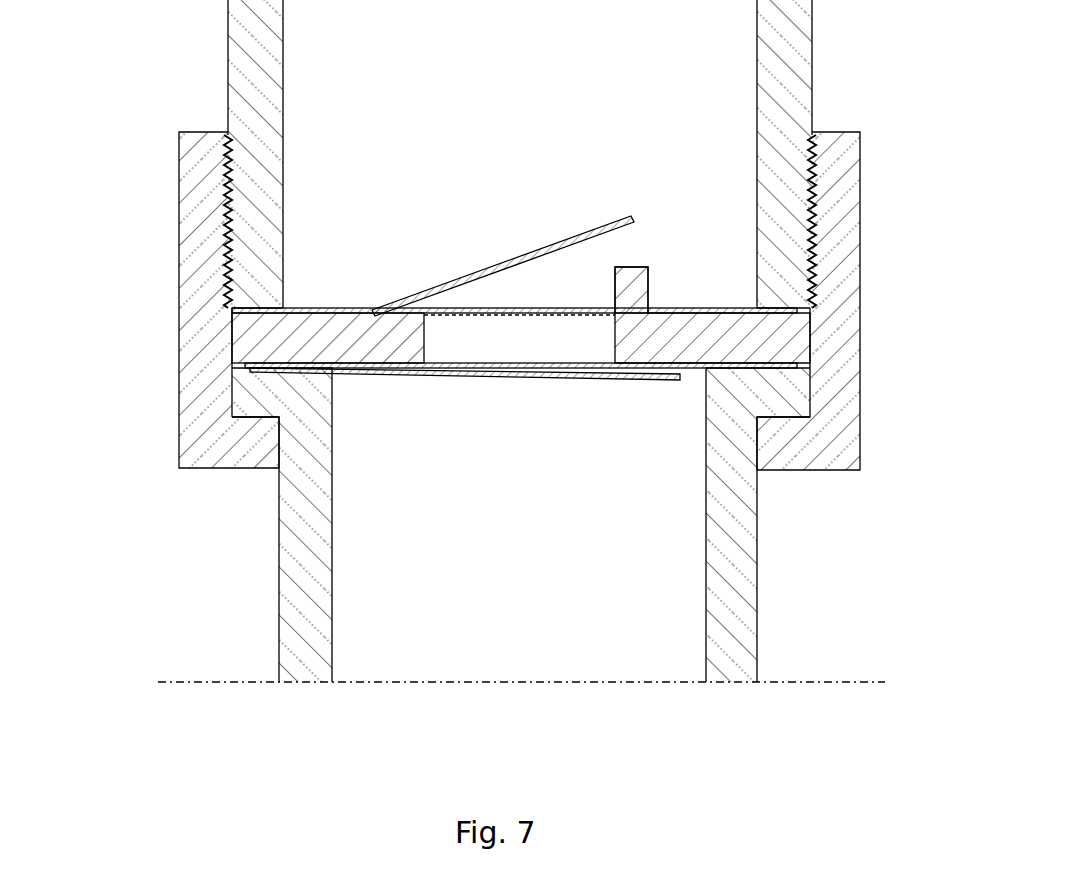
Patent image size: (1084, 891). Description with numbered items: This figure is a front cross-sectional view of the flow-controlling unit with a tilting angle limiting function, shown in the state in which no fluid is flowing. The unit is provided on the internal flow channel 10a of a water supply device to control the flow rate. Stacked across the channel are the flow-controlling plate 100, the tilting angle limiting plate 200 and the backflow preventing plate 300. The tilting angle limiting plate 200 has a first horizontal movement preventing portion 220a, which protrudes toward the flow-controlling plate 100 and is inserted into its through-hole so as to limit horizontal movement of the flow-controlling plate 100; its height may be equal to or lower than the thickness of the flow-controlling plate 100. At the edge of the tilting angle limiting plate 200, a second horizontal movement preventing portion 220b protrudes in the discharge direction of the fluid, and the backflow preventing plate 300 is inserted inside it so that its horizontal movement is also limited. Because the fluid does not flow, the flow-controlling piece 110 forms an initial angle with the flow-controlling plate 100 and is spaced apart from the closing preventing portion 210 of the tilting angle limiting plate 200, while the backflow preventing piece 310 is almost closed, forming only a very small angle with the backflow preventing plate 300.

The internal flow channel 10a is at (710, 62).
The flow-controlling piece 110 is at (448, 282).
The first horizontal movement preventing portion 220a is at (393, 297).
The second horizontal movement preventing portion 220b is at (232, 393).
The backflow preventing piece 310 is at (467, 372).
The closing preventing portion 210 is at (650, 268).
The flow-controlling plate 100 is at (710, 308).
The tilting angle limiting plate 200 is at (777, 337).
The backflow preventing plate 300 is at (728, 367).